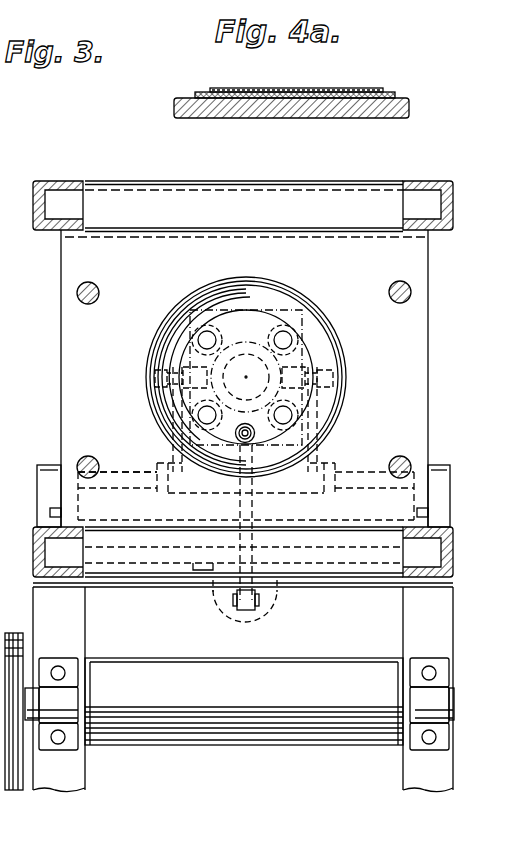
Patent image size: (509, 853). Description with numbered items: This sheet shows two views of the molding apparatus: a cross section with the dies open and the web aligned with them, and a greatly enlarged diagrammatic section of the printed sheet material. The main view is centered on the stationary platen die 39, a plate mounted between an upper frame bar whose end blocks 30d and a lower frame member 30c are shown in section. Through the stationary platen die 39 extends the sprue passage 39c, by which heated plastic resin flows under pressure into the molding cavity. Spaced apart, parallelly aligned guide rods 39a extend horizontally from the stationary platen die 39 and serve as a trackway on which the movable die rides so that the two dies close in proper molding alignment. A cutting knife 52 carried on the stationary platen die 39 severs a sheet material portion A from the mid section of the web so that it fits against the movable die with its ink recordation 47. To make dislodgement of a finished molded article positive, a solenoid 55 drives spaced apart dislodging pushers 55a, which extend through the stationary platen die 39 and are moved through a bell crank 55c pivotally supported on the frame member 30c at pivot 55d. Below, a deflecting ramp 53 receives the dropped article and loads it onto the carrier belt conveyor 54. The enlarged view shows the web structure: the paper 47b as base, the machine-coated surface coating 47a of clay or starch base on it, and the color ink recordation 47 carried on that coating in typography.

In FIG. 4A, the transferable ink recordation 47 is at (302, 86).
In FIG. 4A, the surface coating 47a is at (395, 94).
In FIG. 4A, the paper 47b is at (178, 115).
In FIG. 4A, the sheet material portion A is at (351, 84).
In FIG. 3, the frame member 30c is at (33, 537).
In FIG. 3, the upper frame bar end block 30d is at (52, 168).
In FIG. 3, the stationary platen die 39 is at (160, 253).
In FIG. 3, the guide rods 39a is at (77, 293).
In FIG. 3, the sprue passage 39c is at (255, 433).
In FIG. 3, the cutting knife 52 is at (228, 284).
In FIG. 3, the deflecting ramp 53 is at (385, 622).
In FIG. 3, the carrier belt conveyor 54 is at (290, 710).
In FIG. 3, the solenoid 55 is at (268, 620).
In FIG. 3, the dislodging pushers 55a is at (208, 340).
In FIG. 3, the bell crank 55c is at (250, 514).
In FIG. 3, the pivot 55d is at (132, 472).